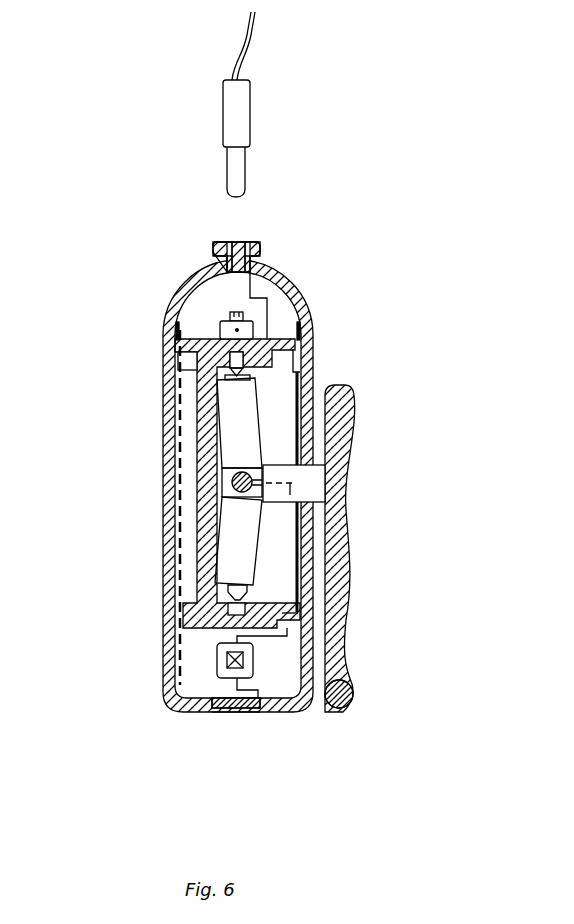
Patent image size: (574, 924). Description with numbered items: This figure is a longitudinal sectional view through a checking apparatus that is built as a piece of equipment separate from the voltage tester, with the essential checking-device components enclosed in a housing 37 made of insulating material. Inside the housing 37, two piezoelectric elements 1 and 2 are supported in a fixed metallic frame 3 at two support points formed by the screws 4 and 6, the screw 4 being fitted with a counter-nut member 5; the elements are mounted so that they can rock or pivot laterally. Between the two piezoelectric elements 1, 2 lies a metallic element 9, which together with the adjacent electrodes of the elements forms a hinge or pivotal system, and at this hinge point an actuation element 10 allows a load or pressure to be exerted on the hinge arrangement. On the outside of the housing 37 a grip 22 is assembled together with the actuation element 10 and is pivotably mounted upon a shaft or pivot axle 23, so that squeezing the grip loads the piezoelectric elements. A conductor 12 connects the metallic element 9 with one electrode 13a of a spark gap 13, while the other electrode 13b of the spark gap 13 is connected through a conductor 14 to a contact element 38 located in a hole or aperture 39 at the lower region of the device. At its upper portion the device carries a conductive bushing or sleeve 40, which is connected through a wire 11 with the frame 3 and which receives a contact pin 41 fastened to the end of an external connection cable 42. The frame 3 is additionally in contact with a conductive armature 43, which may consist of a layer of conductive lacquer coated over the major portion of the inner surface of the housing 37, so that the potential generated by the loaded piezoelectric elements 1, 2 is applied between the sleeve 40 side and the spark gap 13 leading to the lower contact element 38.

The piezoelectric element 1 is at (240, 426).
The piezoelectric element 2 is at (235, 523).
The metallic frame 3 is at (225, 375).
The screw 4 is at (227, 315).
The counter-nut member 5 is at (222, 335).
The screw 6 is at (243, 600).
The metallic element 9 is at (222, 482).
The actuation element 10 is at (308, 488).
The wire 11 is at (262, 298).
The conductor 12 is at (287, 564).
The spark gap 13 is at (223, 650).
The electrode of spark gap 13a is at (227, 657).
The electrode of spark gap 13b is at (227, 670).
The conductor 14 is at (232, 690).
The grip 22 is at (353, 407).
The pivot axle 23 is at (352, 687).
The housing 37 is at (183, 587).
The contact element 38 is at (230, 713).
The aperture 39 is at (247, 712).
The conductive sleeve 40 is at (262, 241).
The contact pin 41 is at (235, 164).
The external connection cable 42 is at (250, 35).
The conductive armature 43 is at (298, 368).